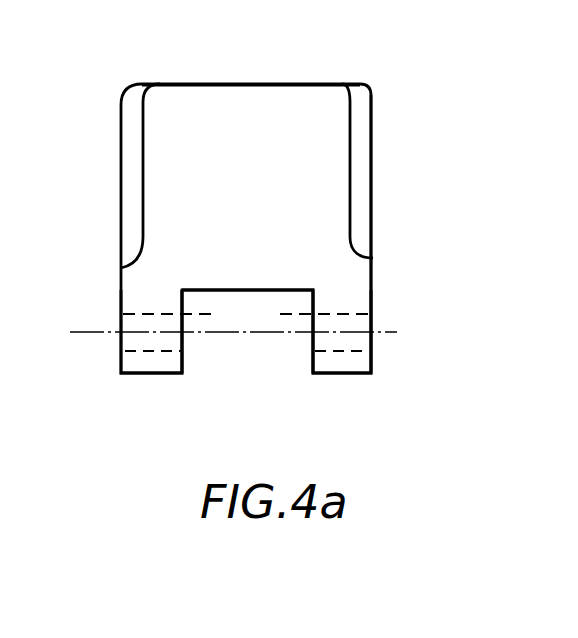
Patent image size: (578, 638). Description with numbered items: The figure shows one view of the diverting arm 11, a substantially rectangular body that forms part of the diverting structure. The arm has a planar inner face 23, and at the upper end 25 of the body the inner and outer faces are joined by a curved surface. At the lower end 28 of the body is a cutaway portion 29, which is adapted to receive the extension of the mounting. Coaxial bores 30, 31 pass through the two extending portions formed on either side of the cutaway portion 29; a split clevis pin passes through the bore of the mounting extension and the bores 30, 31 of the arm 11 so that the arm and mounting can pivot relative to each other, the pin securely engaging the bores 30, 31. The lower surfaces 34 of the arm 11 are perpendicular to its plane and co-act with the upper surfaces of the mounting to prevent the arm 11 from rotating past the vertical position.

The diverting arm 11 is at (386, 82).
The planar inner face 23 is at (373, 177).
The upper end 25 is at (257, 83).
The lower end 28 is at (203, 379).
The cutaway portion 29 is at (246, 314).
The bore 30 is at (123, 350).
The bore 31 is at (380, 341).
The lower surfaces 34 is at (148, 378).